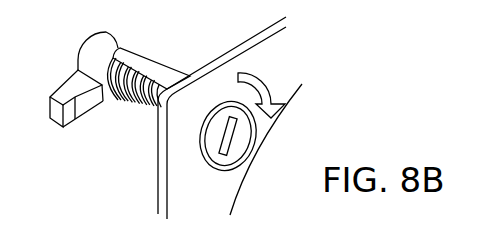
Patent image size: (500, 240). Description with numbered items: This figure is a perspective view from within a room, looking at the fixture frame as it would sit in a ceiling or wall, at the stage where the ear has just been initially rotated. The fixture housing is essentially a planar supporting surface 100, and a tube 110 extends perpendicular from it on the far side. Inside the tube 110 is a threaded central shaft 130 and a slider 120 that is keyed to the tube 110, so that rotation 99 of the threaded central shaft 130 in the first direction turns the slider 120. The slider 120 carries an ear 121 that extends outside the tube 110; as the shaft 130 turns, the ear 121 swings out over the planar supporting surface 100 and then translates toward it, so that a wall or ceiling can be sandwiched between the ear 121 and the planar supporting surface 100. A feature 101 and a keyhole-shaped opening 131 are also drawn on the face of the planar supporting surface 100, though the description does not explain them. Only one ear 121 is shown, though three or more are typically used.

The rotation direction 99 is at (265, 83).
The planar supporting surface 100 is at (296, 29).
The guide line / edge 101 is at (268, 132).
The tube 110 is at (158, 63).
The slider 120 is at (66, 82).
The ear 121 is at (74, 124).
The threaded central shaft 130 is at (142, 106).
The keyhole 131 is at (235, 156).